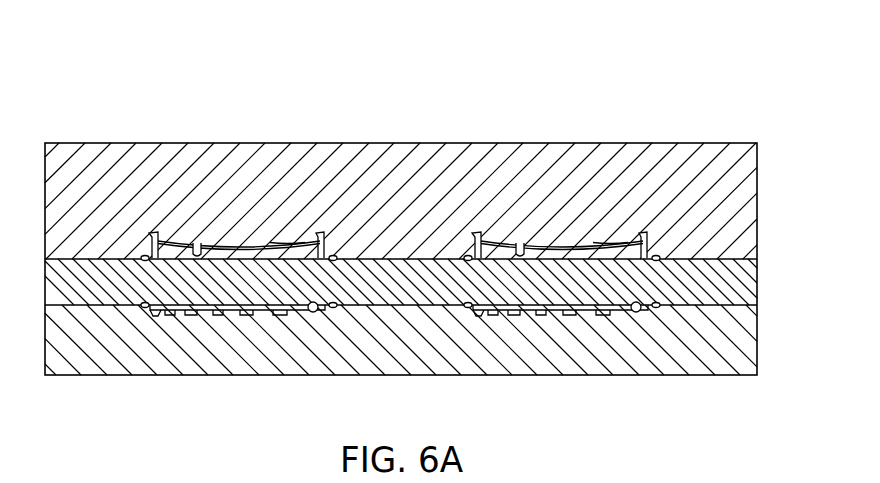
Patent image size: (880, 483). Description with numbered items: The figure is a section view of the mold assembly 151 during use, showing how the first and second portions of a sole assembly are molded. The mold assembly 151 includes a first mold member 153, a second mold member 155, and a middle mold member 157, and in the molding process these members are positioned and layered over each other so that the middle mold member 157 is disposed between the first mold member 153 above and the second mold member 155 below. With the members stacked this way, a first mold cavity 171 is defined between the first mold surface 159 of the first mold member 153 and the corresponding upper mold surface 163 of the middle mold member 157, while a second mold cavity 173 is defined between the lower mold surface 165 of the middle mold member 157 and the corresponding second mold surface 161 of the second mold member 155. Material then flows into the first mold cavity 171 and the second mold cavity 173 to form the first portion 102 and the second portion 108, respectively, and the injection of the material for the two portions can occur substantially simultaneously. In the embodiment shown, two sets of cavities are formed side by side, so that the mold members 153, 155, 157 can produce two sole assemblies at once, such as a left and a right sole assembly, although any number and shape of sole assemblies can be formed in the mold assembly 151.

The mold assembly 151 is at (102, 70).
The first mold member 153 is at (75, 133).
The second mold member 155 is at (75, 386).
The middle mold member 157 is at (114, 315).
The first portion 102 is at (251, 230).
The first mold surface 159 is at (197, 250).
The second mold surface 161 is at (322, 312).
The upper mold surface 163 is at (287, 240).
The lower mold surface 165 is at (222, 310).
The second portion 108 is at (279, 328).
The first mold cavity 171 is at (152, 222).
The second mold cavity 173 is at (154, 328).